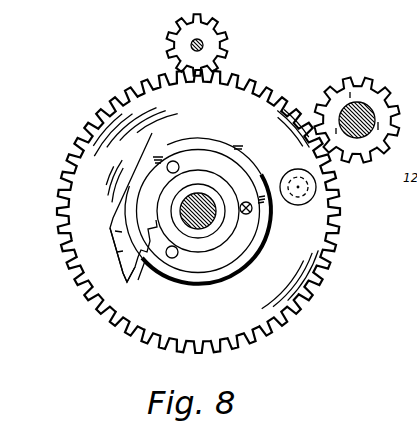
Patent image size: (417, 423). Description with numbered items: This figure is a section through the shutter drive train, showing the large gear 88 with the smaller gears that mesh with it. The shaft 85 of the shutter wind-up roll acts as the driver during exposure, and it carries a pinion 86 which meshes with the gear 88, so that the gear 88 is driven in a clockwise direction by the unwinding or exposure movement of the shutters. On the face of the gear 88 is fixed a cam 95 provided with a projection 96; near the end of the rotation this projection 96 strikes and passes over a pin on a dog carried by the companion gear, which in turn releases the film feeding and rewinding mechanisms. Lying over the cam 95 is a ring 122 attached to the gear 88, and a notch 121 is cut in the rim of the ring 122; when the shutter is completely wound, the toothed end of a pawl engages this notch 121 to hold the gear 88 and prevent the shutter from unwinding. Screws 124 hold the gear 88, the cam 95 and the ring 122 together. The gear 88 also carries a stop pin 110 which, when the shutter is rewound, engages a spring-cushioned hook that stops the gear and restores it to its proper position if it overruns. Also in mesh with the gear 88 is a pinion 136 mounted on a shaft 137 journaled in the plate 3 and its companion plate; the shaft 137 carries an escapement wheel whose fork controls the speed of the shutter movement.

The plate 3 is at (412, 256).
The shaft of the shutter wind-up roll 85 is at (370, 112).
The pinion 86 is at (388, 148).
The gear 88 is at (288, 100).
The cam 95 is at (213, 143).
The projection 96 is at (113, 218).
The stop pin 110 is at (313, 188).
The notch 121 is at (131, 260).
The ring 122 is at (210, 258).
The screws 124 is at (252, 210).
The pinion 136 is at (222, 32).
The shaft 137 is at (212, 43).